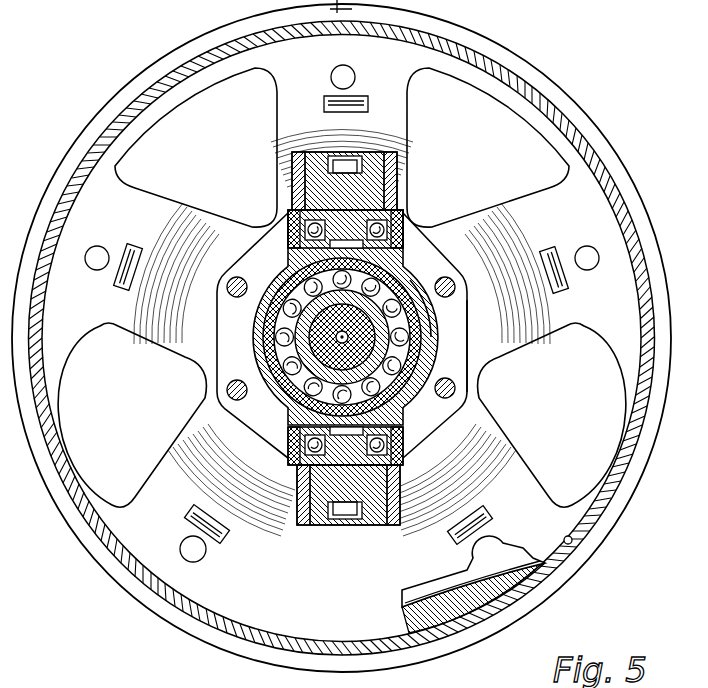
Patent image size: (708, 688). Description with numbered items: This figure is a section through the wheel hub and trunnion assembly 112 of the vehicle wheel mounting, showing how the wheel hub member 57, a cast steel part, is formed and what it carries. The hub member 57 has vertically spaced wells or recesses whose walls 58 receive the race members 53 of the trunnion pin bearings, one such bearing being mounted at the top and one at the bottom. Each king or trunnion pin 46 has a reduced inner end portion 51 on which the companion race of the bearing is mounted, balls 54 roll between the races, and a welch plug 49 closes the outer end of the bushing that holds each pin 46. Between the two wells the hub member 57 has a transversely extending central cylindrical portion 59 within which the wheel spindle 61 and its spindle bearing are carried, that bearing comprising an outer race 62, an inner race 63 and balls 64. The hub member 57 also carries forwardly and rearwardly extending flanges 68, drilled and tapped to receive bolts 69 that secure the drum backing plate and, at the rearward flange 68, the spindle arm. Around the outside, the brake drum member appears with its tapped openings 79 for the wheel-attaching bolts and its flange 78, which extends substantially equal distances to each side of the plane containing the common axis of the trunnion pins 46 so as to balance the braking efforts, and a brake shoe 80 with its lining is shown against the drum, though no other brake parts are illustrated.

The wheel assembly 112 is at (341, 346).
The tapped openings 79 is at (352, 72).
The flanges 68 is at (455, 343).
The wheel hub member 57 is at (466, 367).
The bolts 69 is at (225, 283).
The outer race 62 is at (263, 287).
The central cylindrical portion 59 is at (432, 332).
The balls 64 is at (275, 333).
The wheel spindle 61 is at (387, 300).
The inner race 63 is at (278, 340).
The king or trunnion pin 46 is at (398, 168).
The reduced inner end portion 51 is at (345, 229).
The race member 53 is at (398, 237).
The walls of wells or recesses 58 is at (387, 240).
The balls 54 is at (313, 445).
The welch plug 49 is at (350, 156).
The brake shoe 80 is at (396, 528).
The flange of the brake drum 78 is at (569, 543).